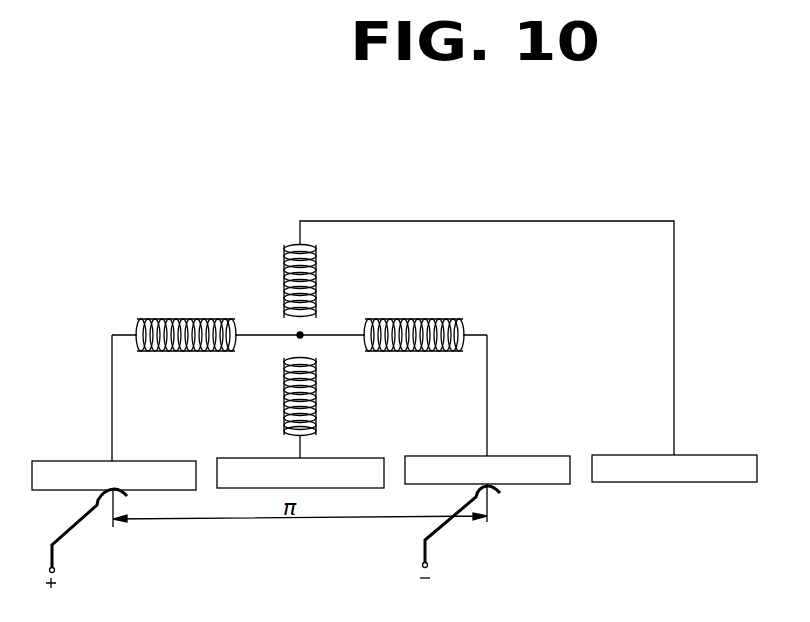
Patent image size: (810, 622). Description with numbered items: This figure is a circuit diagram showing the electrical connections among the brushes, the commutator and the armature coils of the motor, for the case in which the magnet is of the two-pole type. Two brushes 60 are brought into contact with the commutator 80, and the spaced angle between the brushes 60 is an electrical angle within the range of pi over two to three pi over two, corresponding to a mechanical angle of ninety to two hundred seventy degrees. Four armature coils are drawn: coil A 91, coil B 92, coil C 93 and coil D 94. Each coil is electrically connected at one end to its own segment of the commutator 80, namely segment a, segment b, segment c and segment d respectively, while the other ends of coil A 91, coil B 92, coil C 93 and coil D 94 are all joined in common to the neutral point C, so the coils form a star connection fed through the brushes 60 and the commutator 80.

The brushes 60 is at (73, 531).
The commutator 80 is at (542, 427).
The coil A 91 is at (183, 318).
The coil B 92 is at (318, 400).
The coil C 93 is at (425, 318).
The coil D 94 is at (317, 280).
The neutral point C is at (302, 337).